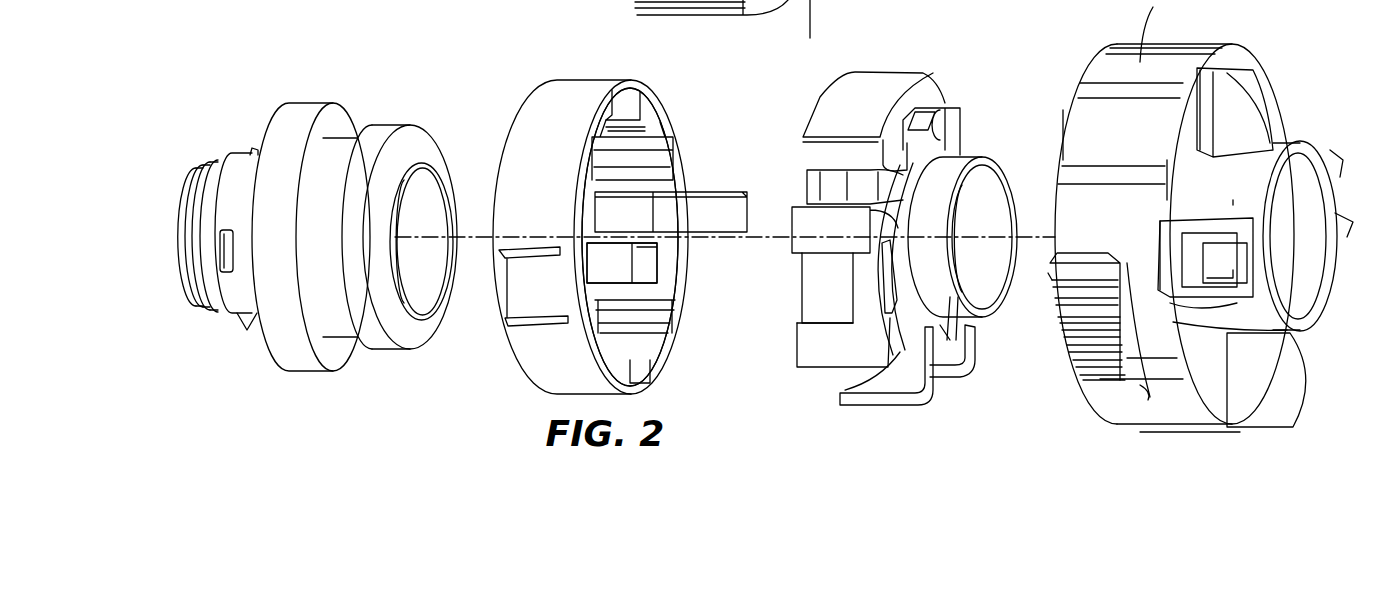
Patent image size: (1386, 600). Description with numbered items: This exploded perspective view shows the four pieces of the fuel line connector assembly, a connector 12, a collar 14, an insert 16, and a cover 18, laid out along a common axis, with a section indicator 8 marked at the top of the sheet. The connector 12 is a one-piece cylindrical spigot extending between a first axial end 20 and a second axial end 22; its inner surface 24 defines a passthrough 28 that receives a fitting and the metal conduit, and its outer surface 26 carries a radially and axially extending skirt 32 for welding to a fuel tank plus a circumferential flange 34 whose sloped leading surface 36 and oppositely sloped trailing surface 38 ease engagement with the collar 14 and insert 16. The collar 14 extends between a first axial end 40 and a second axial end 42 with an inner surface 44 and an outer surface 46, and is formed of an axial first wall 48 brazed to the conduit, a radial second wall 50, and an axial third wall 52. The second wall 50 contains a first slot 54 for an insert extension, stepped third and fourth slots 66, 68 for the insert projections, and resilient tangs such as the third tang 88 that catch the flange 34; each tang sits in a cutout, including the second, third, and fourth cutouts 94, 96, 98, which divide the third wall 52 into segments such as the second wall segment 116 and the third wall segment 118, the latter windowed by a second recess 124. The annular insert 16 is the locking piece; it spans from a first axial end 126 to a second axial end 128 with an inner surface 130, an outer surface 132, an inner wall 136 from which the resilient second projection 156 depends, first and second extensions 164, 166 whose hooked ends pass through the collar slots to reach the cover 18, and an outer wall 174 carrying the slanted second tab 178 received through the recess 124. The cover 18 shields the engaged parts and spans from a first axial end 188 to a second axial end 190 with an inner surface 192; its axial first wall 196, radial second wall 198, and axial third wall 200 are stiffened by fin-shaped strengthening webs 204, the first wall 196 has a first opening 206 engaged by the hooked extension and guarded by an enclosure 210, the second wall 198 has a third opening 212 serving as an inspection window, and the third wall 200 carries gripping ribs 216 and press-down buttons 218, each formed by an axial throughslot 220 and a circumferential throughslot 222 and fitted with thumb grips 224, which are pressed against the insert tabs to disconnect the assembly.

The section line 8 is at (798, 24).
The connector 12 is at (313, 100).
The collar 14 is at (883, 68).
The insert 16 is at (578, 68).
The cover 18 is at (1202, 24).
The first axial end 20 is at (183, 277).
The second axial end 22 is at (443, 167).
The inner surface 24 is at (430, 278).
The outer surface 26 is at (335, 322).
The passthrough 28 is at (417, 290).
The skirt 32 is at (302, 373).
The flange 34 is at (393, 352).
The leading surface 36 is at (402, 132).
The trailing surface 38 is at (355, 168).
The first axial end 40 is at (812, 353).
The second axial end 42 is at (982, 310).
The inner surface 44 is at (985, 288).
The outer surface 46 is at (833, 333).
The first wall 48 is at (950, 297).
The second wall 50 is at (945, 373).
The third wall 52 is at (867, 400).
The first slot 54 is at (888, 288).
The third slot 66 is at (950, 300).
The fourth slot 68 is at (917, 130).
The third tang 88 is at (812, 180).
The second cutout 94 is at (947, 110).
The third cutout 96 is at (820, 148).
The fourth cutout 98 is at (832, 367).
The second wall segment 116 is at (838, 108).
The third wall segment 118 is at (803, 230).
The second recess 124 is at (803, 255).
The first axial end 126 is at (513, 360).
The second axial end 128 is at (670, 355).
The inner surface 130 is at (663, 283).
The outer surface 132 is at (557, 102).
The inner wall 136 is at (622, 263).
The second projection 156 is at (633, 120).
The first extension 164 is at (717, 187).
The second extension 166 is at (625, 280).
The outer wall 174 is at (630, 237).
The second tab 178 is at (522, 252).
The first axial end 188 is at (1102, 58).
The second axial end 190 is at (1303, 153).
The inner surface 192 is at (1303, 207).
The first wall 196 is at (1233, 192).
The second wall 198 is at (1188, 171).
The third wall 200 is at (1099, 135).
The strengthening webs 204 is at (1303, 393).
The first opening 206 is at (1205, 263).
The enclosure 210 is at (1220, 292).
The third opening 212 is at (1165, 240).
The gripping ribs 216 is at (1087, 172).
The press-down buttons 218 is at (1048, 273).
The first throughslot 220 is at (1066, 253).
The second throughslot 222 is at (1150, 395).
The thumb grips 224 is at (1102, 317).